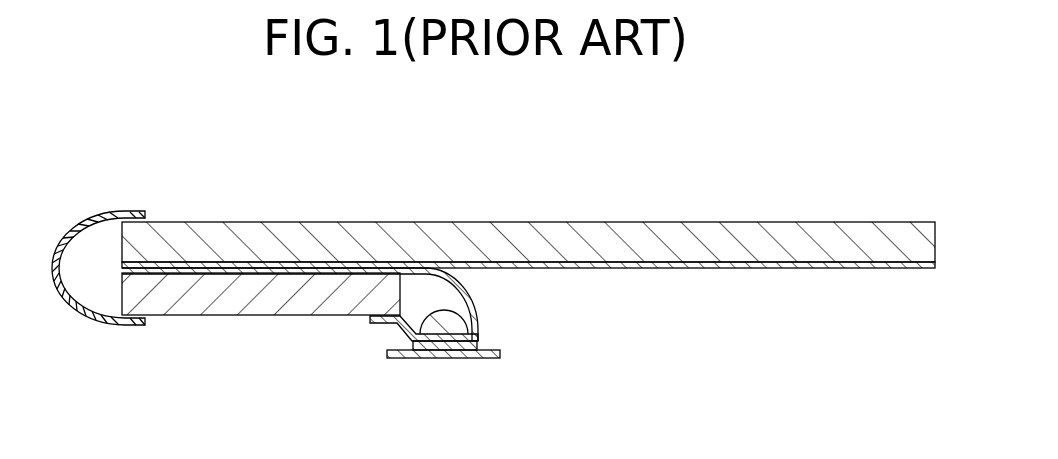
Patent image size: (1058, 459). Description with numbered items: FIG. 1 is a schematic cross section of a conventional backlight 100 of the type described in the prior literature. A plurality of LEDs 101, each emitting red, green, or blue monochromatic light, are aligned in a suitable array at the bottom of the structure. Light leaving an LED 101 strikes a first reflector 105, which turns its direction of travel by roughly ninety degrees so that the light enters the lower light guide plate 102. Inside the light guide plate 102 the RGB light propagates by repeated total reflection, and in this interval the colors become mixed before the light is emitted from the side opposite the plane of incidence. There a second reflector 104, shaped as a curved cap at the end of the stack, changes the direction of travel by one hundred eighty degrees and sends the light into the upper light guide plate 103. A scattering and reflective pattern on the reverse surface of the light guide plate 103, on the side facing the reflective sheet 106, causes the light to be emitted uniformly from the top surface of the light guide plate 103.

The conventional backlight 100 is at (833, 176).
The LED 101 is at (448, 338).
The light guide plate 102 is at (225, 300).
The light guide plate 103 is at (692, 240).
The second reflector 104 is at (75, 308).
The first reflector 105 is at (465, 280).
The reflective sheet 106 is at (830, 272).